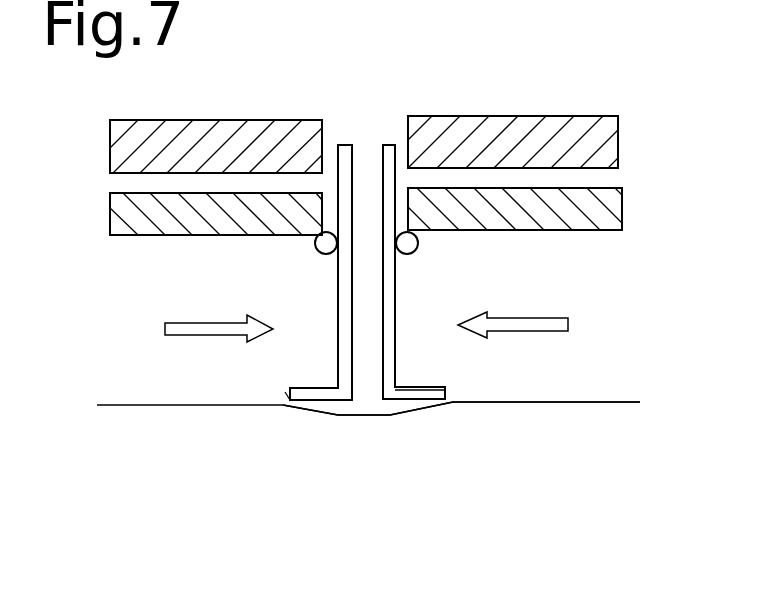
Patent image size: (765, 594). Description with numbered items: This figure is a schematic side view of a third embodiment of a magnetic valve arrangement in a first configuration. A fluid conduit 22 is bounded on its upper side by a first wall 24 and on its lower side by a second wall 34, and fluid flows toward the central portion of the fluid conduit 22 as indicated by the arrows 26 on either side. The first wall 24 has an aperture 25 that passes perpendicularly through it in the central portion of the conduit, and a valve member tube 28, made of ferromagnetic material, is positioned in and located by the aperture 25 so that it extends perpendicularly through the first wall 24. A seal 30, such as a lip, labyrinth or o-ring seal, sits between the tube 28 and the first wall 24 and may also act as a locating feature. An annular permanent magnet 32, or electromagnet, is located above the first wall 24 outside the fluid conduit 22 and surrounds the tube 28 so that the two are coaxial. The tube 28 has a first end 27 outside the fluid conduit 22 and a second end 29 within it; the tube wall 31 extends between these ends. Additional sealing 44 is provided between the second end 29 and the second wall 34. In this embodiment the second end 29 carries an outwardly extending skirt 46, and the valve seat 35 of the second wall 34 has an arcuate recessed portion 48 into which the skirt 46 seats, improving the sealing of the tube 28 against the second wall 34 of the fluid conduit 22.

The fluid conduit 22 is at (170, 383).
The first wall 24 is at (133, 233).
The aperture 25 is at (327, 213).
The arrows 26 is at (225, 323).
The first end 27 is at (393, 137).
The valve member tube 28 is at (387, 332).
The second end 29 is at (390, 380).
The seal 30 is at (412, 245).
The first plate 31 is at (363, 308).
The permanent magnet 32 is at (503, 122).
The second wall 34 is at (552, 403).
The valve seat 35 is at (362, 417).
The additional sealing 44 is at (275, 393).
The skirt 46 is at (405, 402).
The arcuate recessed portion 48 is at (337, 417).